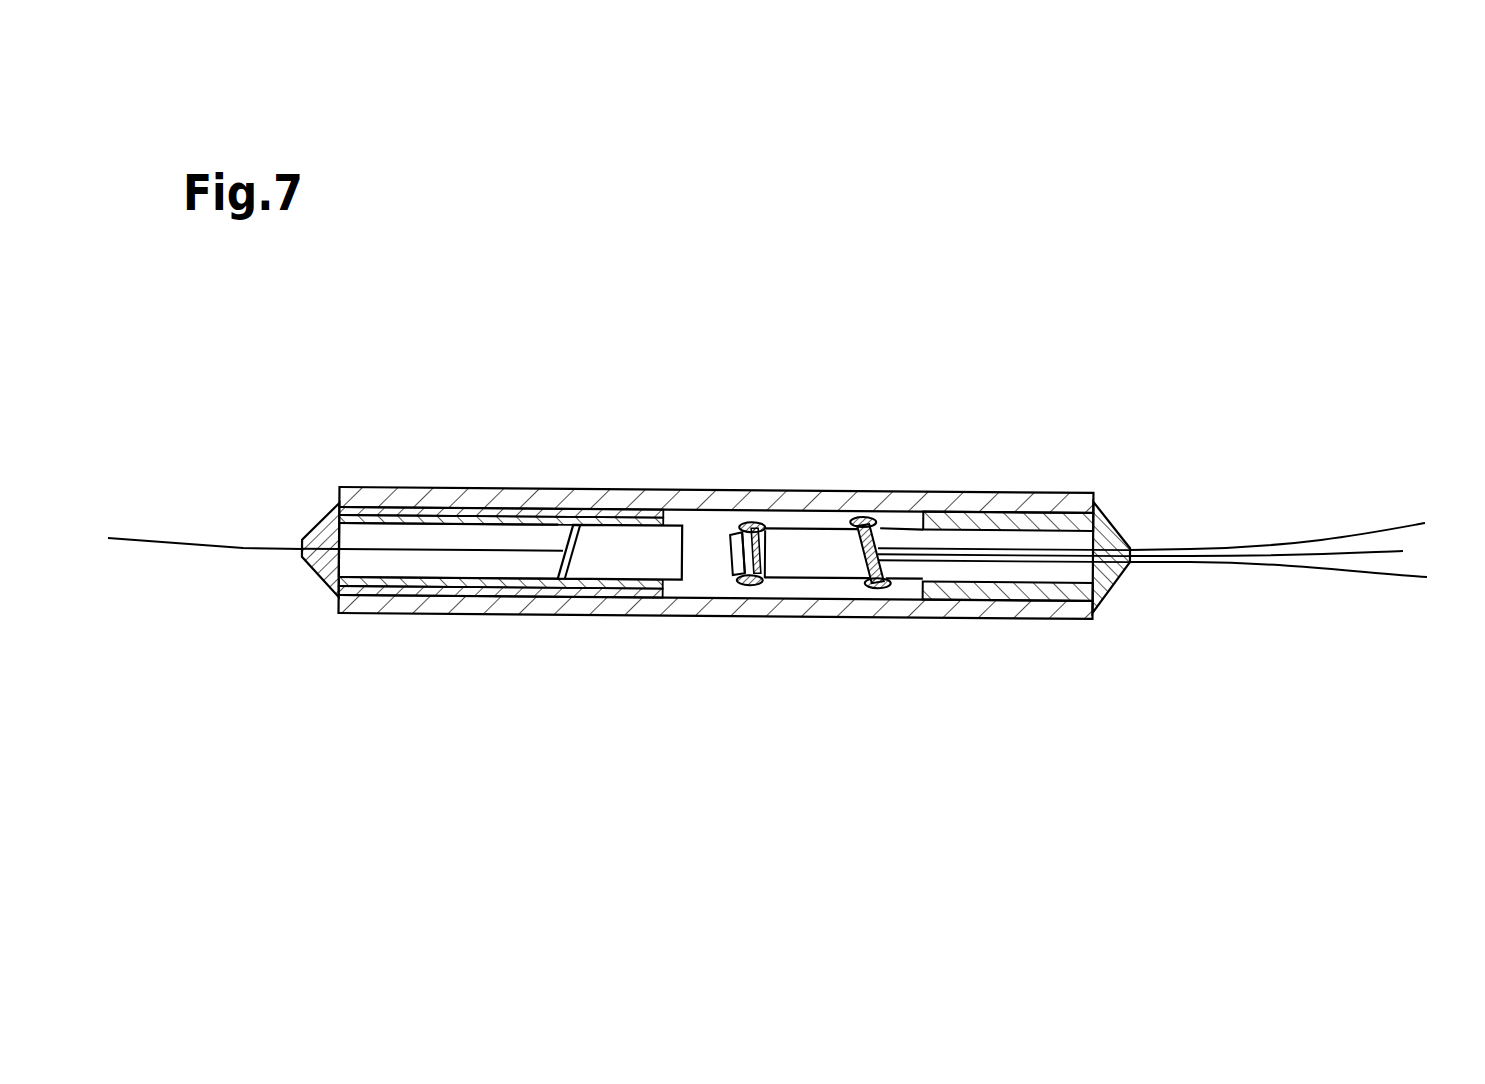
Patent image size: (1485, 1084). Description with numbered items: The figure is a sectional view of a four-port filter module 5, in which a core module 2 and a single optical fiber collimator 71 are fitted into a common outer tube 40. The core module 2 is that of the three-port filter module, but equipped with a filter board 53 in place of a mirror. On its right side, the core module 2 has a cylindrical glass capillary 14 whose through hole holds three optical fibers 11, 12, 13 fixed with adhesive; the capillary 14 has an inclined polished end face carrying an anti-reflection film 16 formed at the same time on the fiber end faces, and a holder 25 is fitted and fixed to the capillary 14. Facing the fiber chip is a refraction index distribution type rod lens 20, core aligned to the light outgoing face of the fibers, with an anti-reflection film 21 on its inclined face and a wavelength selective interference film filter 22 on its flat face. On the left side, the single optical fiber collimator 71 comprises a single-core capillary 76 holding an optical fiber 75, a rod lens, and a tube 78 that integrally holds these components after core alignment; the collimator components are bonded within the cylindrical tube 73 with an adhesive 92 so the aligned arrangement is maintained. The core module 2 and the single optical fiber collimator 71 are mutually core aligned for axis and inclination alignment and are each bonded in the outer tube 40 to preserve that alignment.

The four-port filter module 5 is at (761, 368).
The core module 2 is at (815, 440).
The single optical fiber collimator 71 is at (605, 433).
The adhesive 92 is at (442, 503).
The tube 78 is at (492, 510).
The single-core capillary 76 is at (545, 535).
The cylindrical tube 73 is at (596, 532).
The optical fiber 75 is at (177, 547).
The outer tube 40 is at (600, 608).
The filter board 53 is at (735, 577).
The interference film filter 22 is at (768, 548).
The anti-reflection film 21 is at (860, 566).
The refraction index distribution type rod lens 20 is at (823, 537).
The anti-reflection film 16 is at (882, 533).
The capillary 14 is at (955, 533).
The holder 25 is at (1028, 515).
The optical fiber 12 is at (1372, 532).
The optical fiber 13 is at (1387, 550).
The optical fiber 11 is at (1382, 577).